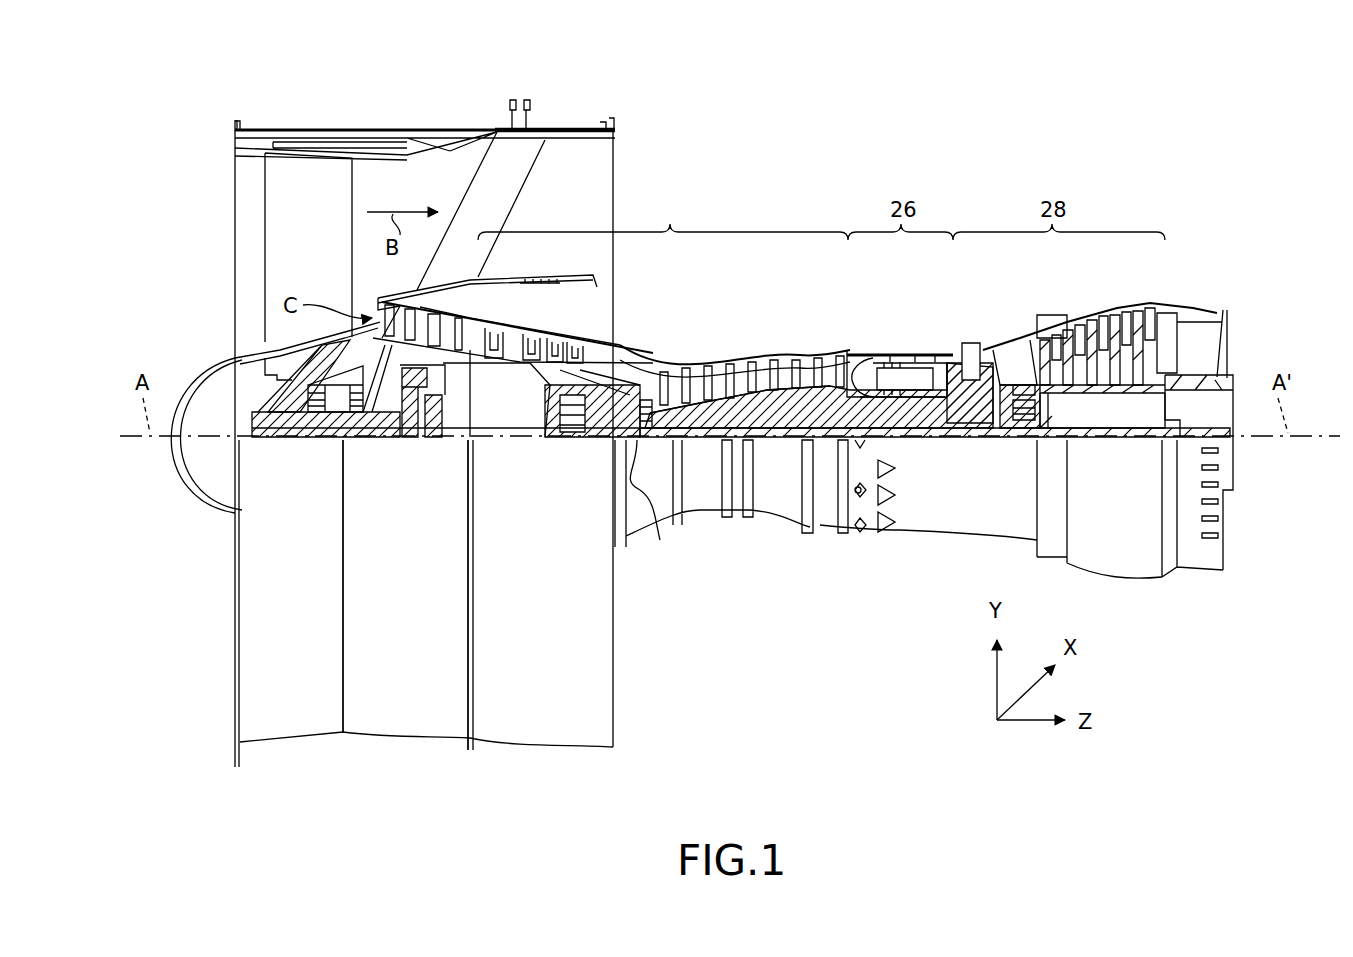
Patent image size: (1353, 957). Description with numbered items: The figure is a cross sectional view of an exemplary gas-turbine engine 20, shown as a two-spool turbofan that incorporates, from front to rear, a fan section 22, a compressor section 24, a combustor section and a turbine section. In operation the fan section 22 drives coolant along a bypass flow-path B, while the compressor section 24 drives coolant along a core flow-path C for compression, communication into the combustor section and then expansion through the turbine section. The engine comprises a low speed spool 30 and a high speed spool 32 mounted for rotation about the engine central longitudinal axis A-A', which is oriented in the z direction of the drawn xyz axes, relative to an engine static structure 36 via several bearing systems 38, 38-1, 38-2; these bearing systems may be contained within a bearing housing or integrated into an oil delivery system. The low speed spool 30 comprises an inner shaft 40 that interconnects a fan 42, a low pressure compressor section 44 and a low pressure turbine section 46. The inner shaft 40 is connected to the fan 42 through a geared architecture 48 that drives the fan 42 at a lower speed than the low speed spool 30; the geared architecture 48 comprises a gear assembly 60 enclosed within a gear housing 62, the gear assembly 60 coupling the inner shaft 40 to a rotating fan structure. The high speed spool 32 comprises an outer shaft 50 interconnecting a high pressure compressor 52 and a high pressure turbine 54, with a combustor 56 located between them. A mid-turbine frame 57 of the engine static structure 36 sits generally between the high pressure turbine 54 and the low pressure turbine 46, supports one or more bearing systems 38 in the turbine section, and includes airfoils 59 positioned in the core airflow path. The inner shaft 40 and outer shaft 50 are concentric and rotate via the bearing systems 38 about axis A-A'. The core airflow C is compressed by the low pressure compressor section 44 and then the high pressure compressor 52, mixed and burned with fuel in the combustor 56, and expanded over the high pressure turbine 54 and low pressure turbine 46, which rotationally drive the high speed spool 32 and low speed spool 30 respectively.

The gas-turbine engine 20 is at (950, 165).
The fan section 22 is at (468, 108).
The compressor section 24 is at (735, 287).
The low speed spool 30 is at (782, 448).
The high speed spool 32 is at (820, 400).
The engine static structure 36 is at (403, 718).
The bearing system 38 is at (1008, 428).
The bearing system 38-1 is at (320, 412).
The bearing system 38-2 is at (568, 435).
The inner shaft 40 is at (645, 506).
The fan 42 is at (318, 258).
The low pressure compressor section 44 is at (552, 330).
The low pressure turbine section 46 is at (1100, 325).
The geared architecture 48 is at (436, 450).
The outer shaft 50 is at (900, 418).
The high pressure compressor 52 is at (762, 400).
The high pressure turbine 54 is at (968, 342).
The combustor 56 is at (898, 372).
The mid-turbine frame 57 is at (1008, 378).
The airfoils 59 is at (1028, 385).
The gear assembly 60 is at (437, 418).
The gear housing 62 is at (440, 392).